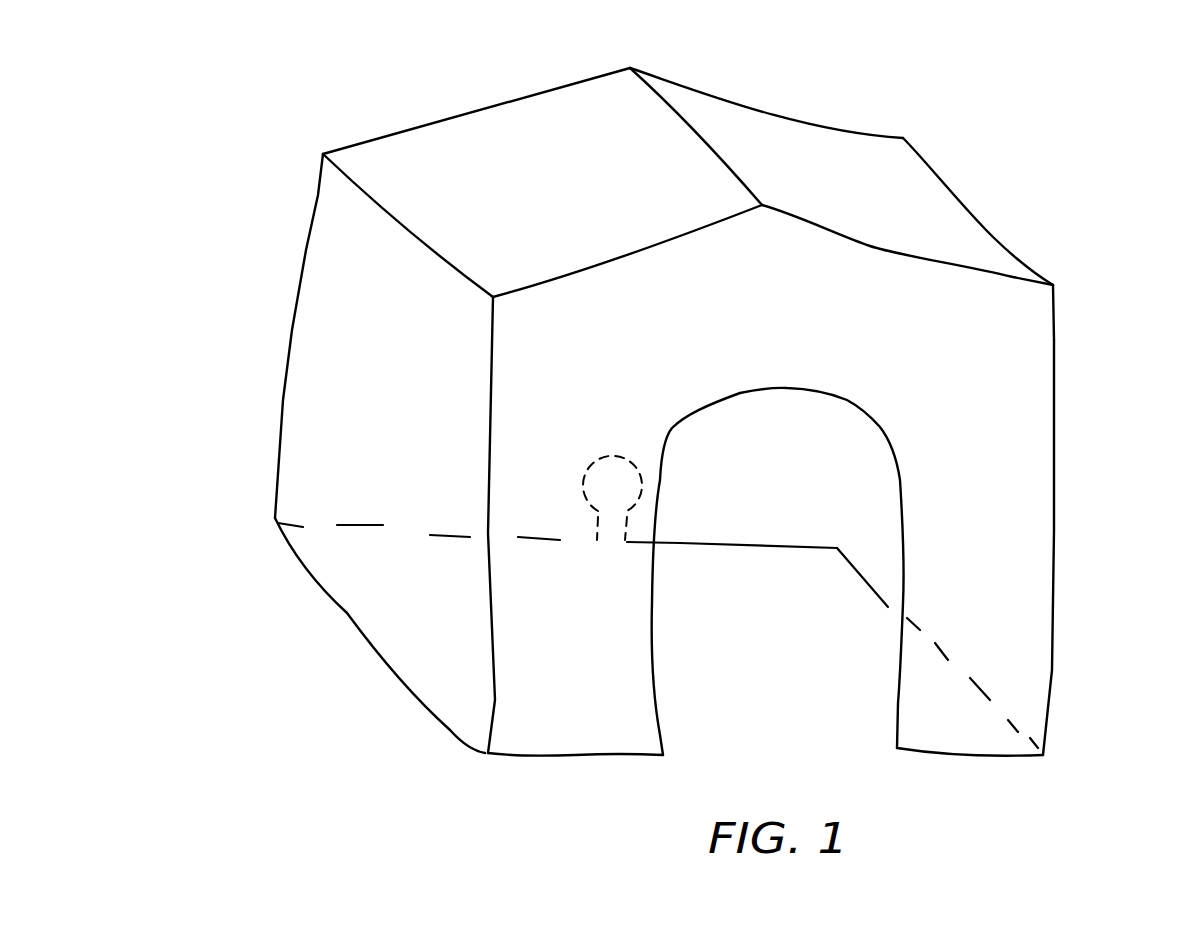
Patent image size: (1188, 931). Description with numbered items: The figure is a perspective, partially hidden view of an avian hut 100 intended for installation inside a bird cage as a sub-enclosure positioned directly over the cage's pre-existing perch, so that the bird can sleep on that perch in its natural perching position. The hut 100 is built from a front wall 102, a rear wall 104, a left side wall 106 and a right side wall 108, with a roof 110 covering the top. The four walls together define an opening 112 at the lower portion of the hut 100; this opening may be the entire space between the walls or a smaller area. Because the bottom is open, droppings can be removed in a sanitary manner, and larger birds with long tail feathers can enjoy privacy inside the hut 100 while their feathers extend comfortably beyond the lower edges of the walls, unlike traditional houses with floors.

The avian hut 100 is at (383, 81).
The front wall 102 is at (1018, 433).
The rear wall 104 is at (790, 498).
The left side wall 106 is at (328, 458).
The right side wall 108 is at (1057, 330).
The roof 110 is at (795, 157).
The opening 112 is at (727, 637).